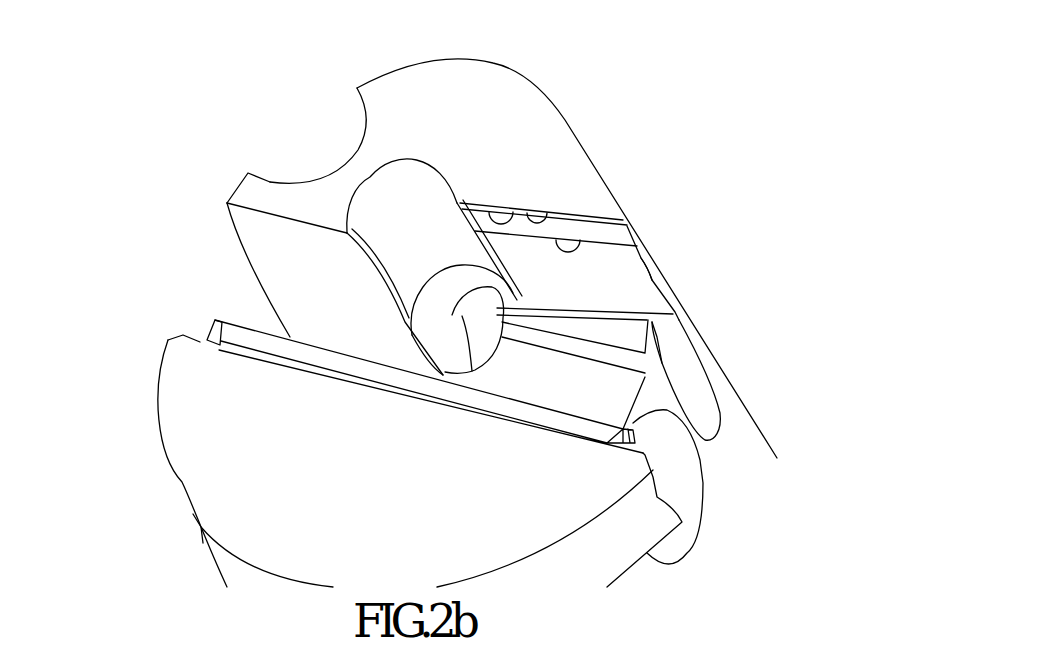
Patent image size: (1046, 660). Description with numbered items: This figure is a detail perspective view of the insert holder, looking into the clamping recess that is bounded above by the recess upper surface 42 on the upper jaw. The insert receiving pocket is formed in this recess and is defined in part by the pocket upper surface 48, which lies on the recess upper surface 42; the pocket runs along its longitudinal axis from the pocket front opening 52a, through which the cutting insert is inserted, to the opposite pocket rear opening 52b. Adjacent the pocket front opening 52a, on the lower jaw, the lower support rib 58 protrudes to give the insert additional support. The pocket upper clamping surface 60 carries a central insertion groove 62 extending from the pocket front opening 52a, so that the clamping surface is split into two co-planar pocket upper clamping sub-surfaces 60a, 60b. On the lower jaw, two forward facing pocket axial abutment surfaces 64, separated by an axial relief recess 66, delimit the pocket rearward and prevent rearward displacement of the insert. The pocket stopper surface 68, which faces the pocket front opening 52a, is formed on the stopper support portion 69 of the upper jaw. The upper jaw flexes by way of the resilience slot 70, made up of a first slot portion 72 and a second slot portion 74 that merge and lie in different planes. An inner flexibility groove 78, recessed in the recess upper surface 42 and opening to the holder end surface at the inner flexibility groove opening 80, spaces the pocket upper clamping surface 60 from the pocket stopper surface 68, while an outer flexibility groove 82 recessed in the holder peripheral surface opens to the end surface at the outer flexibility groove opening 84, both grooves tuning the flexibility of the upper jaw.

The recess upper surface 42 is at (268, 246).
The pocket upper surface 48 is at (545, 220).
The pocket front opening 52a is at (710, 314).
The pocket rear opening 52b is at (163, 272).
The lower support rib 58 is at (614, 482).
The pocket upper clamping surface 60 is at (556, 180).
The pocket upper clamping sub-surface 60a is at (592, 266).
The pocket upper clamping sub-surface 60b is at (497, 210).
The insertion groove 62 is at (543, 243).
The pocket axial abutment surface 64 is at (530, 413).
The axial relief recess 66 is at (603, 411).
The pocket stopper surface 68 is at (362, 252).
The stopper support portion 69 is at (297, 214).
The resilience slot 70 is at (622, 272).
The first slot portion 72 is at (637, 230).
The second slot portion 74 is at (353, 328).
The inner flexibility groove 78 is at (412, 243).
The inner flexibility groove opening 80 is at (408, 172).
The outer flexibility groove 82 is at (320, 141).
The outer flexibility groove opening 84 is at (268, 180).